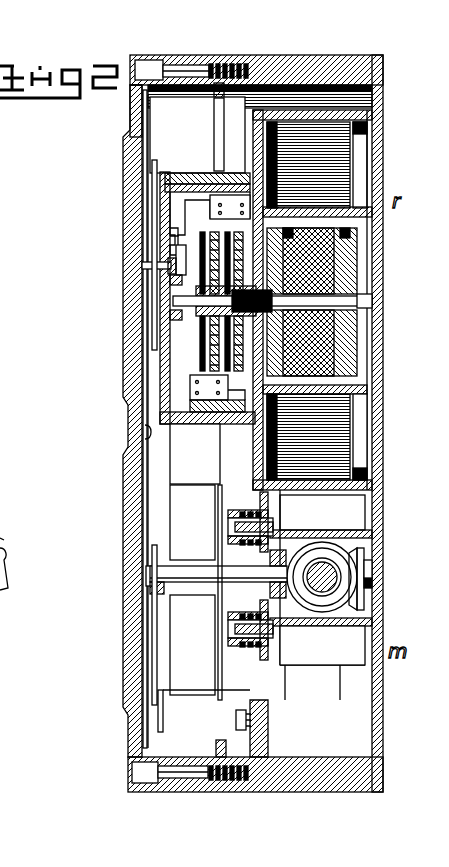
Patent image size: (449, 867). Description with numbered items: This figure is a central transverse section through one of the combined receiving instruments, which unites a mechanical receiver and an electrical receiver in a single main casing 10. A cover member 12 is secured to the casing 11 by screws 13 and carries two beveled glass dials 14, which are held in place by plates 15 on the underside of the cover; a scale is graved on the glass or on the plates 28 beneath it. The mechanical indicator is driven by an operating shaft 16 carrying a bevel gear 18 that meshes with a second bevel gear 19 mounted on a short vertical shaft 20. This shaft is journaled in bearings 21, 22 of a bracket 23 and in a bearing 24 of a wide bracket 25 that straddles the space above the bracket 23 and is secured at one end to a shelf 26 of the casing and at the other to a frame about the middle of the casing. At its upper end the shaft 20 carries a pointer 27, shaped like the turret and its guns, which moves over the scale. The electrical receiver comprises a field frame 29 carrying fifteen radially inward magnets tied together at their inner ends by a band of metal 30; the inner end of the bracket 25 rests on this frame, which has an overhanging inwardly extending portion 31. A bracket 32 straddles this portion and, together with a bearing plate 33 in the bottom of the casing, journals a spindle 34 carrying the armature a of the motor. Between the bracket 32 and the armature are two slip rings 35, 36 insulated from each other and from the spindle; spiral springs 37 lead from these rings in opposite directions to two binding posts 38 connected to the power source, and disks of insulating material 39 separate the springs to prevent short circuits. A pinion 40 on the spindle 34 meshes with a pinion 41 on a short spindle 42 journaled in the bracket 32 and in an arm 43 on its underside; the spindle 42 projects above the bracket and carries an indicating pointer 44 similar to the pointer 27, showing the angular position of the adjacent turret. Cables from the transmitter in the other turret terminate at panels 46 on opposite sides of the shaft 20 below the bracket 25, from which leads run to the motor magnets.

The main casing 10 is at (123, 426).
The casing 11 is at (383, 76).
The cover member 12 is at (130, 112).
The screws 13 is at (231, 66).
The beveled glass dials 14 is at (123, 182).
The plates 15 is at (124, 456).
The operating shaft 16 is at (323, 568).
The bevel gear 18 is at (350, 578).
The second bevel gear 19 is at (358, 605).
The vertical shaft 20 is at (366, 566).
The bearing 21 is at (366, 591).
The bearing 22 is at (234, 592).
The bracket 23 is at (326, 626).
The bearing 24 is at (172, 580).
The wide bracket 25 is at (164, 600).
The shelf 26 is at (268, 734).
The pointer 27 is at (153, 620).
The plates 28 is at (166, 140).
The field frame 29 is at (372, 128).
The band of metal 30 is at (362, 206).
The overhanging inwardly extending portion 31 is at (214, 146).
The bracket 32 is at (186, 424).
The bearing plate 33 is at (370, 298).
The spindle 34 is at (370, 306).
The slip ring 35 is at (290, 300).
The slip ring 36 is at (205, 298).
The spiral springs 37 is at (240, 234).
The binding posts 38 is at (200, 392).
The disks of insulating material 39 is at (208, 354).
The pinion 40 is at (165, 314).
The pinion 41 is at (165, 250).
The short spindle 42 is at (142, 265).
The arm 43 is at (168, 240).
The indicating pointer 44 is at (153, 342).
The panels 46 is at (222, 518).
The armature a is at (355, 243).